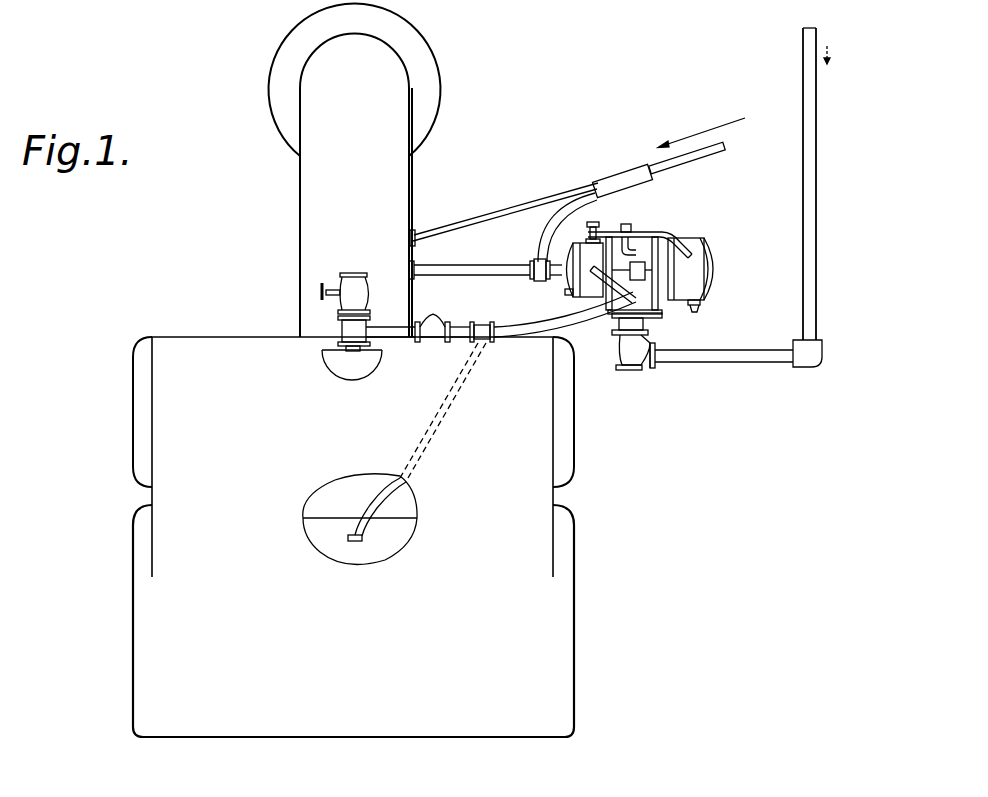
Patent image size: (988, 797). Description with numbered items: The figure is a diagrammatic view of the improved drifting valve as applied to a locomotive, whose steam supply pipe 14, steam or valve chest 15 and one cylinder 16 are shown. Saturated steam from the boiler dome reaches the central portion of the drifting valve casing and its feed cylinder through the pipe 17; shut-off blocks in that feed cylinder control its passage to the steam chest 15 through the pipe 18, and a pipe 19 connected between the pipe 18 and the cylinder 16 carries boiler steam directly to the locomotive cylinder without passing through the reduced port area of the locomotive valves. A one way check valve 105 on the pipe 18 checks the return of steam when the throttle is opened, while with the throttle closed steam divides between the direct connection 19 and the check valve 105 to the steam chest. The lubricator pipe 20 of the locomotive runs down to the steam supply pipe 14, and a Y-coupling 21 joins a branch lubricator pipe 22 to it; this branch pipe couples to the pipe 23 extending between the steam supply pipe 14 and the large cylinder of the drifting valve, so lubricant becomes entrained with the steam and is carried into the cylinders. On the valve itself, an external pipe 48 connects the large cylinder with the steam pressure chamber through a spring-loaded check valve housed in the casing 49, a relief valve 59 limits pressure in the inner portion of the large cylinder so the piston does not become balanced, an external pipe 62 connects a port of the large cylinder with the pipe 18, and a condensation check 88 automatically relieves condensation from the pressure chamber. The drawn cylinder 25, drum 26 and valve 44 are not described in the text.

The steam supply pipe 14 is at (310, 186).
The steam chest 15 is at (137, 400).
The locomotive cylinder 16 is at (137, 548).
The boiler steam pipe 17 is at (816, 242).
The steam chest pipe 18 is at (590, 318).
The direct connection pipe 19 is at (400, 497).
The lubricator pipe 20 is at (515, 210).
The Y-coupling 21 is at (648, 182).
The branch lubricator pipe 22 is at (540, 238).
The connecting pipe 23 is at (476, 272).
The cylinder 25 is at (576, 257).
The drum 26 is at (690, 262).
The valve 44 is at (649, 315).
The external pipe 48 is at (671, 240).
The check valve casing 49 is at (593, 232).
The relief valve 59 is at (630, 232).
The external pipe 62 is at (592, 276).
The condensation check 88 is at (700, 309).
The one way check valve 105 is at (432, 338).